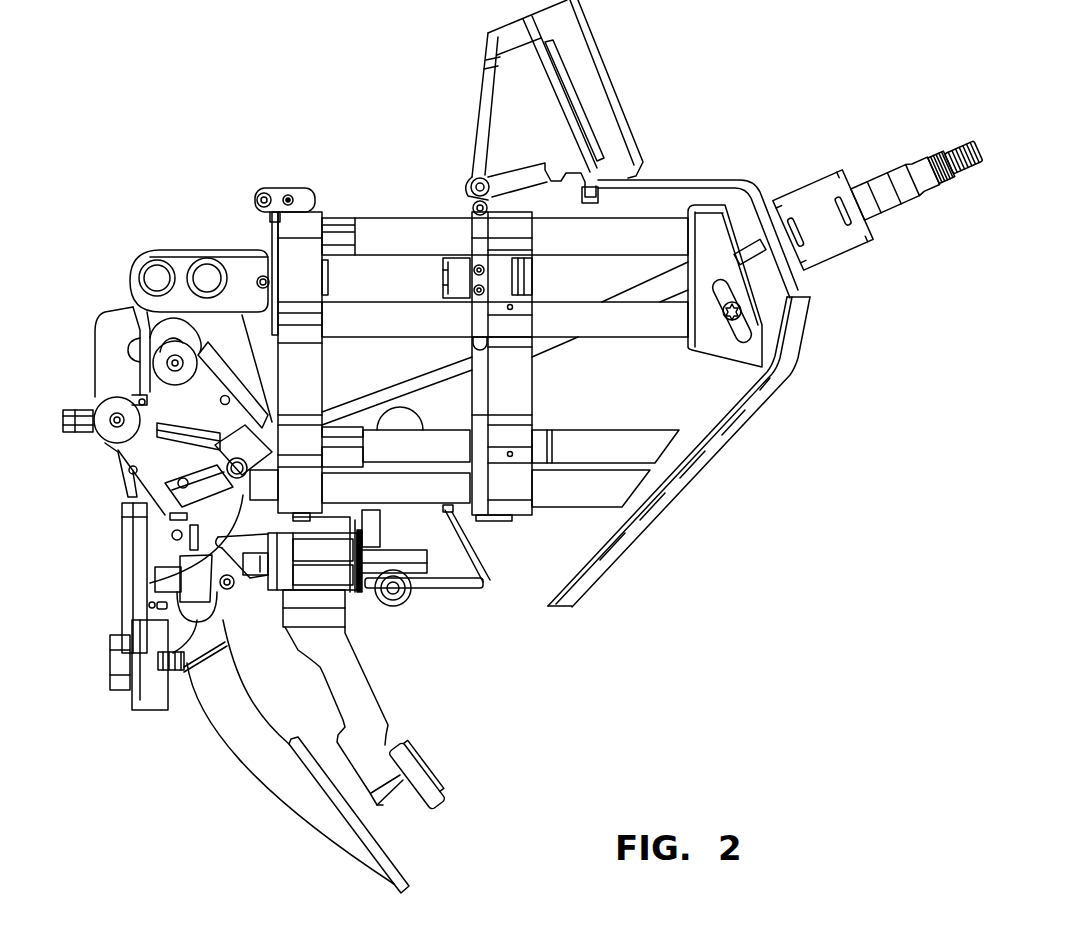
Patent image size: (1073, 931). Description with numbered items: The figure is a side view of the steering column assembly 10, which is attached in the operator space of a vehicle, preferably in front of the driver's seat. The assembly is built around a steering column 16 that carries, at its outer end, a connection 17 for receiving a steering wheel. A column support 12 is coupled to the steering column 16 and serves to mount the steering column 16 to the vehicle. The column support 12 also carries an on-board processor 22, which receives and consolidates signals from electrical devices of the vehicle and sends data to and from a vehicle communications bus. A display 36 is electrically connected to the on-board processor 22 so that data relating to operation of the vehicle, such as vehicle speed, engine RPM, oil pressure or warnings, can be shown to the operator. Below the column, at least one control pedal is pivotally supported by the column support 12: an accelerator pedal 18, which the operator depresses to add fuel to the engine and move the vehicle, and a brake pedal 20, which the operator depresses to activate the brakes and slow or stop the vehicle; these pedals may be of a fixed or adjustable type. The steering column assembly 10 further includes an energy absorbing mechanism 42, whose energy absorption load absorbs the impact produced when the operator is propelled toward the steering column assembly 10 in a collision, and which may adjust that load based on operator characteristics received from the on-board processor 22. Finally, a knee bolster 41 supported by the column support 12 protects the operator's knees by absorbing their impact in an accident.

The steering column assembly 10 is at (770, 85).
The column support 12 is at (318, 212).
The steering column 16 is at (880, 212).
The connection 17 is at (968, 178).
The accelerator pedal 18 is at (397, 867).
The brake pedal 20 is at (443, 782).
The on-board processor 22 is at (555, 57).
The display 36 is at (618, 104).
The knee bolster 41 is at (638, 522).
The energy absorbing (EA) mechanism 42 is at (158, 578).